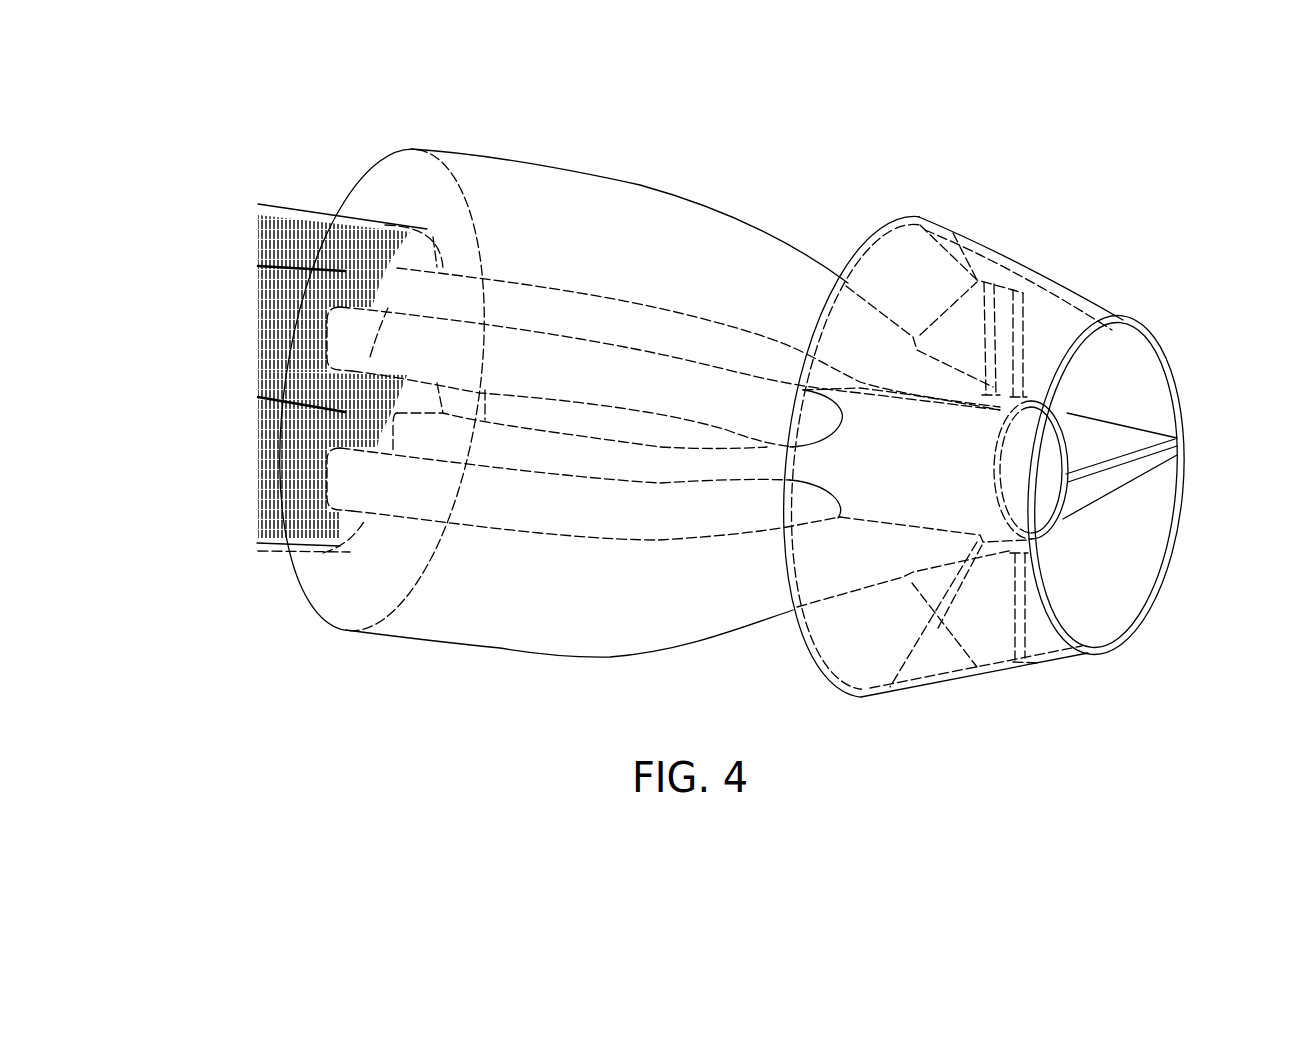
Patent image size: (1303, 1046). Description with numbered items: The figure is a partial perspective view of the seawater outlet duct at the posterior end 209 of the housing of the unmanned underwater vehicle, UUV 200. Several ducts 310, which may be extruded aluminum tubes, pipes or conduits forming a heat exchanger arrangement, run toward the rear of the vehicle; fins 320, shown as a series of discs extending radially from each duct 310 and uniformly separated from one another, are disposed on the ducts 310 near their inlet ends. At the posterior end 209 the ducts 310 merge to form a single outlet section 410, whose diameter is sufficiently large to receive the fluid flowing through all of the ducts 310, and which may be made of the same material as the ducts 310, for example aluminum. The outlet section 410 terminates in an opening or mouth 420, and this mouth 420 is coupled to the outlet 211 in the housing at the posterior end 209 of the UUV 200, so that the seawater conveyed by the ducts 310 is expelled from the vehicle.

The UUV 200 is at (712, 250).
The posterior end 209 is at (1067, 432).
The outlet 211 is at (1177, 439).
The duct 310 is at (455, 335).
The fins 320 is at (318, 337).
The outlet section 410 is at (933, 477).
The mouth 420 is at (1037, 480).